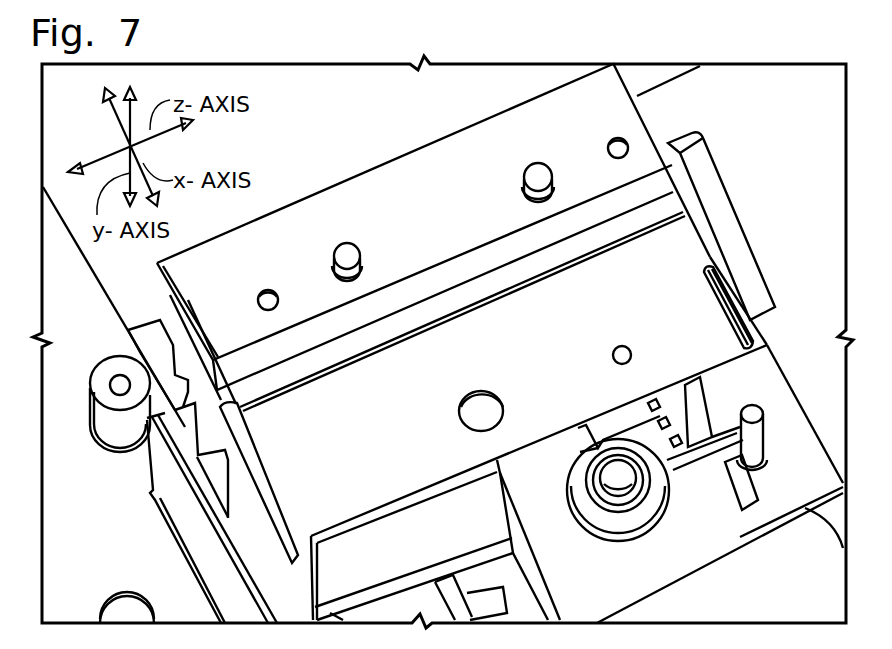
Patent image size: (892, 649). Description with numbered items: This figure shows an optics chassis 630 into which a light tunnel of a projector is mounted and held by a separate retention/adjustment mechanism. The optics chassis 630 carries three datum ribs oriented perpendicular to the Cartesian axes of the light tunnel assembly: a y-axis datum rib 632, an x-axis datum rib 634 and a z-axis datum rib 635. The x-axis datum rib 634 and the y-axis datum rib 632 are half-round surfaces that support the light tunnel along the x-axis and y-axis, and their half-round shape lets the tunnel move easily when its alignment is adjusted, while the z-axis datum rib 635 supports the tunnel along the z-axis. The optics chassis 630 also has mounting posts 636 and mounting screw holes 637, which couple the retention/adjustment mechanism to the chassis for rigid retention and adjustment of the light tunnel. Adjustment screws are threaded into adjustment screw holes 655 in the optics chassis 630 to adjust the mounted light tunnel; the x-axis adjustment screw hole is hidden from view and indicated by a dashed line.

The optics chassis 630 is at (430, 145).
The y-axis datum rib 632 is at (252, 465).
The x-axis datum rib 634 is at (312, 534).
The z-axis datum rib 635 is at (705, 270).
The mounting posts 636 is at (522, 185).
The mounting screw holes 637 is at (258, 297).
The adjustment screw holes 655 is at (658, 398).